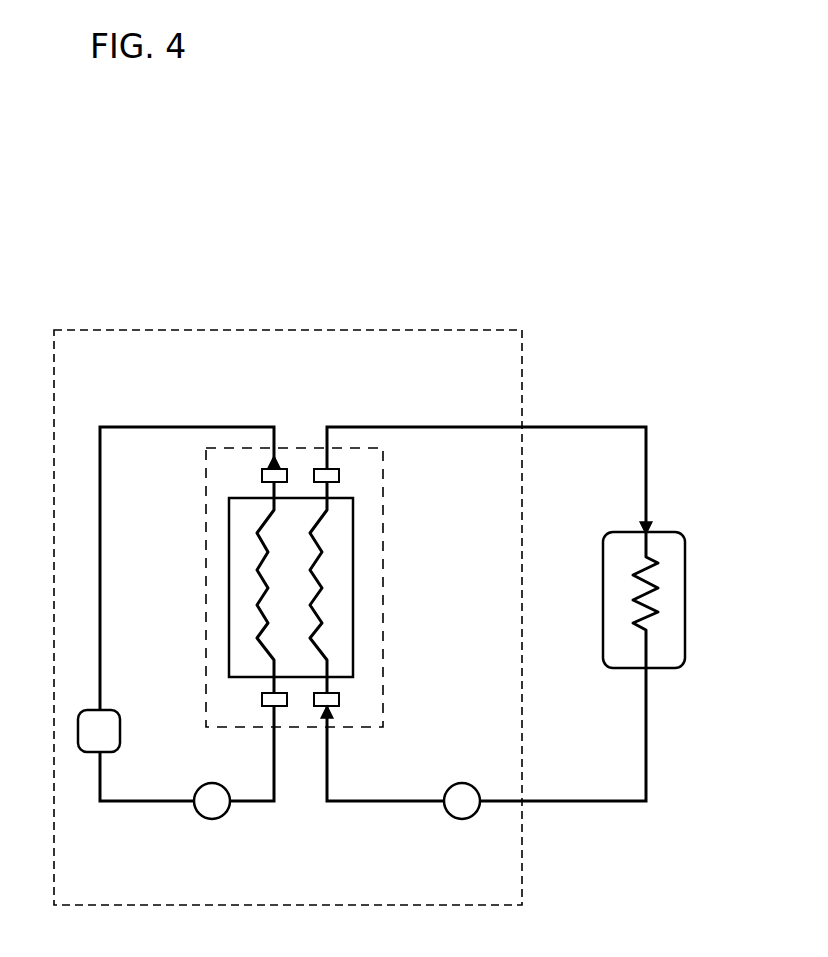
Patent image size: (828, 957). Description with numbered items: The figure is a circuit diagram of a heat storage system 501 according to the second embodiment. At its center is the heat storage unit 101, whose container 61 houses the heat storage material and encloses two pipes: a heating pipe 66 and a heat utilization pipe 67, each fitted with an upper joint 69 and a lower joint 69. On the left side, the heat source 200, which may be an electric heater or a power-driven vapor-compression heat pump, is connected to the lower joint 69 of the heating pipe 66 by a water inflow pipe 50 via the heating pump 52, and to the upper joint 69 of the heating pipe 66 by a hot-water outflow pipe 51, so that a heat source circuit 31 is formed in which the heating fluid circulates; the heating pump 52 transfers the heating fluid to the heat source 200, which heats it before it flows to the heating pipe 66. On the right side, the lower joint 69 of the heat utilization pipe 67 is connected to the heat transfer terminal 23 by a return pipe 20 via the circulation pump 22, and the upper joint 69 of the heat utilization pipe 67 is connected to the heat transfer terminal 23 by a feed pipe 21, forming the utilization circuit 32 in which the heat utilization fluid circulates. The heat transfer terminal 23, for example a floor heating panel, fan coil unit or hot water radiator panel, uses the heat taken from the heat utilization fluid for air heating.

The heat storage system 501 is at (415, 330).
The hot-water outflow pipe 51 is at (146, 427).
The heat source circuit 31 is at (211, 416).
The feed pipe 21 is at (387, 427).
The utilization circuit 32 is at (457, 414).
The joint 69 is at (262, 477).
The heat storage unit 101 is at (206, 512).
The container 61 is at (355, 526).
The heating pipe 66 is at (257, 570).
The heat utilization pipe 67 is at (322, 585).
The heat transfer terminal 23 is at (673, 532).
The heat source 200 is at (122, 726).
The water inflow pipe 50 is at (153, 803).
The heating pump 52 is at (214, 821).
The return pipe 20 is at (407, 803).
The circulation pump 22 is at (464, 821).